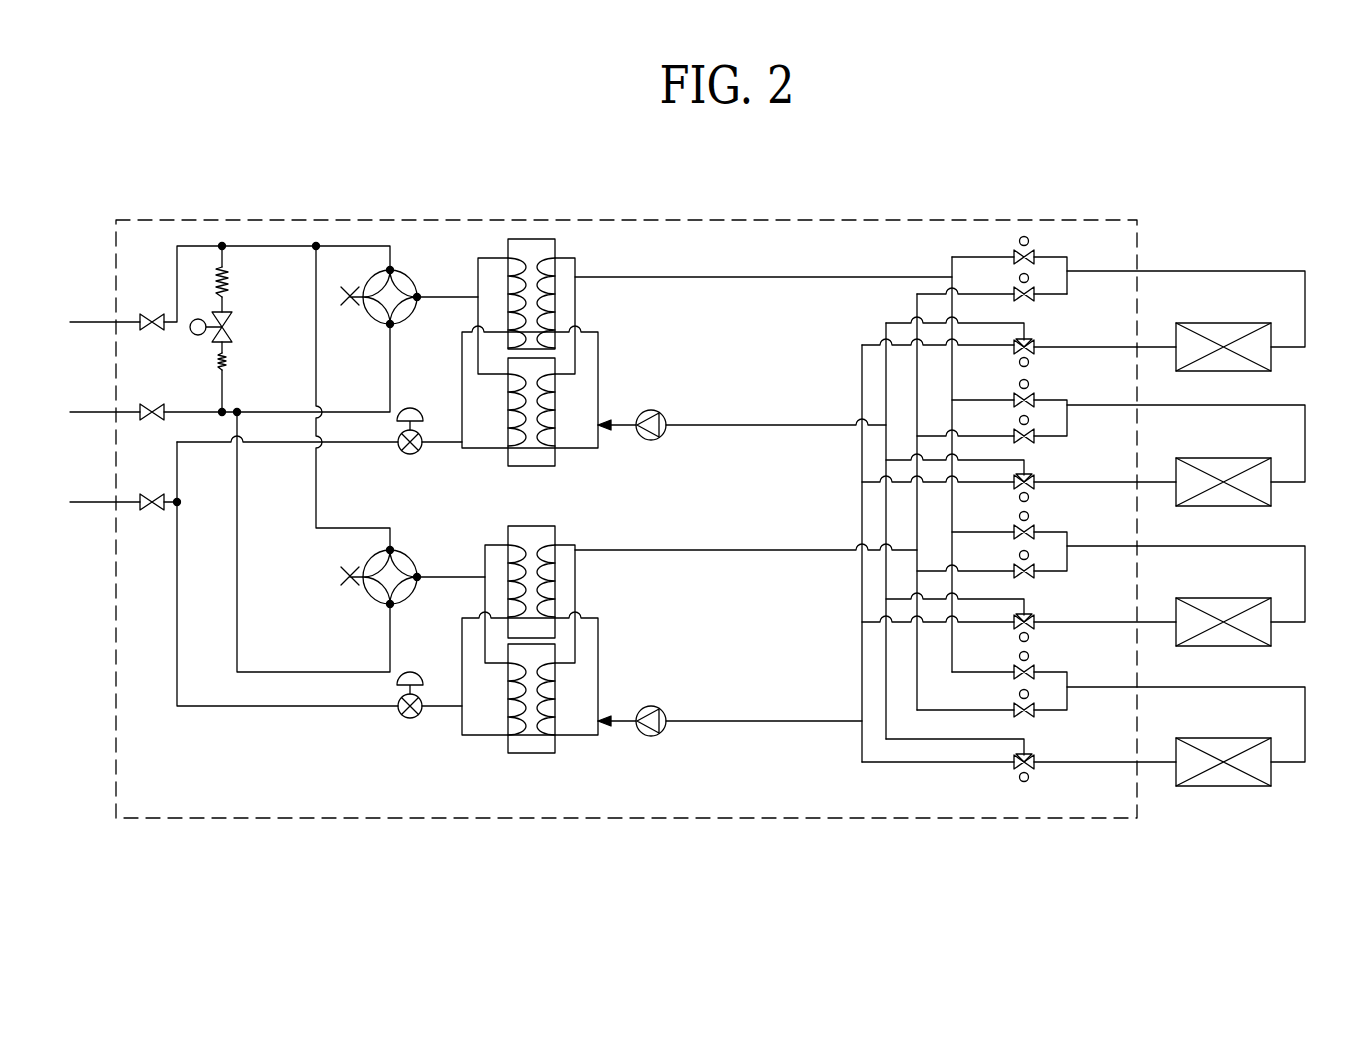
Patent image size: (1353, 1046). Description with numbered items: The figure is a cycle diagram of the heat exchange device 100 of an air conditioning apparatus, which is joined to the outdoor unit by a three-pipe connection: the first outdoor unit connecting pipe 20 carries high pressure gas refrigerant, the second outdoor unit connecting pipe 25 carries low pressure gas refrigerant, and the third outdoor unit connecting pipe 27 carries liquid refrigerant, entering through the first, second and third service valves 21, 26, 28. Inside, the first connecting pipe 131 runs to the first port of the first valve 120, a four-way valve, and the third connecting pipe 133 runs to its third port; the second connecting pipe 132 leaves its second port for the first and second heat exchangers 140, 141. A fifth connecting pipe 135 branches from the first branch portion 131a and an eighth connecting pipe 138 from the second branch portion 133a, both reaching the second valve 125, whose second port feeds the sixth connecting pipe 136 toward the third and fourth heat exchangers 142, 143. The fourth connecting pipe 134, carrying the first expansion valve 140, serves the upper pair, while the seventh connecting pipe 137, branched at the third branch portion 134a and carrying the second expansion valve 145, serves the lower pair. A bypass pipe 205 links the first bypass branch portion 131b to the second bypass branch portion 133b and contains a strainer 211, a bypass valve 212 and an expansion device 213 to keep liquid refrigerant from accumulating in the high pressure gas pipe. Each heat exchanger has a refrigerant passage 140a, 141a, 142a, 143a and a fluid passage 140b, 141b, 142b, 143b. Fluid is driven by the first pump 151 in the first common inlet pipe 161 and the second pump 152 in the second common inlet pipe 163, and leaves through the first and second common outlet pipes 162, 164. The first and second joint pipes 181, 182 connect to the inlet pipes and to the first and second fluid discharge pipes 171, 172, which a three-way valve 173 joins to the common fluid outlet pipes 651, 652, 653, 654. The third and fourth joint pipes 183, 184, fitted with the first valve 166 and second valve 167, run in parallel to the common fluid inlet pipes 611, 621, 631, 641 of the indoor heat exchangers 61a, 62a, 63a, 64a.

The first outdoor unit connecting pipe 20 is at (87, 322).
The first service valve 21 is at (148, 312).
The second outdoor unit connecting pipe 25 is at (87, 412).
The second service valve 26 is at (148, 402).
The third outdoor unit connecting pipe 27 is at (87, 502).
The third service valve 28 is at (148, 492).
The heat exchange device 100 is at (848, 220).
The first valve 120 is at (396, 275).
The second valve 125 is at (368, 560).
The first connecting pipe 131 is at (262, 245).
The first branch portion 131a is at (316, 244).
The first bypass branch portion 131b is at (220, 244).
The second connecting pipe 132 is at (448, 295).
The third connecting pipe 133 is at (352, 411).
The second branch portion 133a is at (238, 408).
The second bypass branch portion 133b is at (218, 408).
The fourth connecting pipe 134 is at (355, 444).
The third branch portion 134a is at (180, 500).
The fifth connecting pipe 135 is at (316, 500).
The sixth connecting pipe 136 is at (439, 580).
The seventh connecting pipe 137 is at (333, 707).
The eighth connecting pipe 138 is at (237, 514).
The first heat exchanger 140 is at (410, 456).
The first refrigerant passage 140a is at (516, 262).
The first fluid passage 140b is at (546, 262).
The second heat exchanger 141 is at (512, 466).
The second refrigerant passage 141a is at (508, 452).
The second fluid passage 141b is at (548, 450).
The third heat exchanger 142 is at (531, 526).
The third refrigerant passage 142a is at (512, 548).
The third fluid passage 142b is at (548, 548).
The fourth heat exchanger 143 is at (531, 755).
The fourth refrigerant passage 143a is at (516, 753).
The fourth fluid passage 143b is at (546, 753).
The second expansion valve 145 is at (410, 720).
The first pump 151 is at (651, 410).
The second pump 152 is at (651, 706).
The first common inlet pipe 161 is at (621, 430).
The first common outlet pipe 162 is at (683, 275).
The second common inlet pipe 163 is at (623, 725).
The second common outlet pipe 164 is at (670, 552).
The first valve 166 is at (1024, 236).
The second valve 167 is at (1033, 280).
The first fluid discharge pipe 171 is at (886, 323).
The second fluid discharge pipe 172 is at (862, 345).
The three-way valve 173 is at (1036, 764).
The first joint pipe 181 is at (886, 645).
The second joint pipe 182 is at (862, 680).
The third joint pipe 183 is at (951, 290).
The fourth joint pipe 184 is at (917, 513).
The bypass pipe 205 is at (226, 258).
The strainer 211 is at (228, 284).
The bypass valve 212 is at (234, 327).
The expansion device 213 is at (228, 360).
The common fluid inlet pipe 611 is at (1224, 270).
The common fluid inlet pipe 621 is at (1305, 430).
The common fluid inlet pipe 631 is at (1305, 572).
The common fluid inlet pipe 641 is at (1305, 713).
The common fluid outlet pipe 651 is at (1165, 348).
The common fluid outlet pipe 652 is at (1165, 484).
The common fluid outlet pipe 653 is at (1165, 624).
The common fluid outlet pipe 654 is at (1165, 764).
The indoor heat exchanger 61a is at (1273, 357).
The indoor heat exchanger 62a is at (1273, 492).
The indoor heat exchanger 63a is at (1273, 633).
The indoor heat exchanger 64a is at (1273, 773).